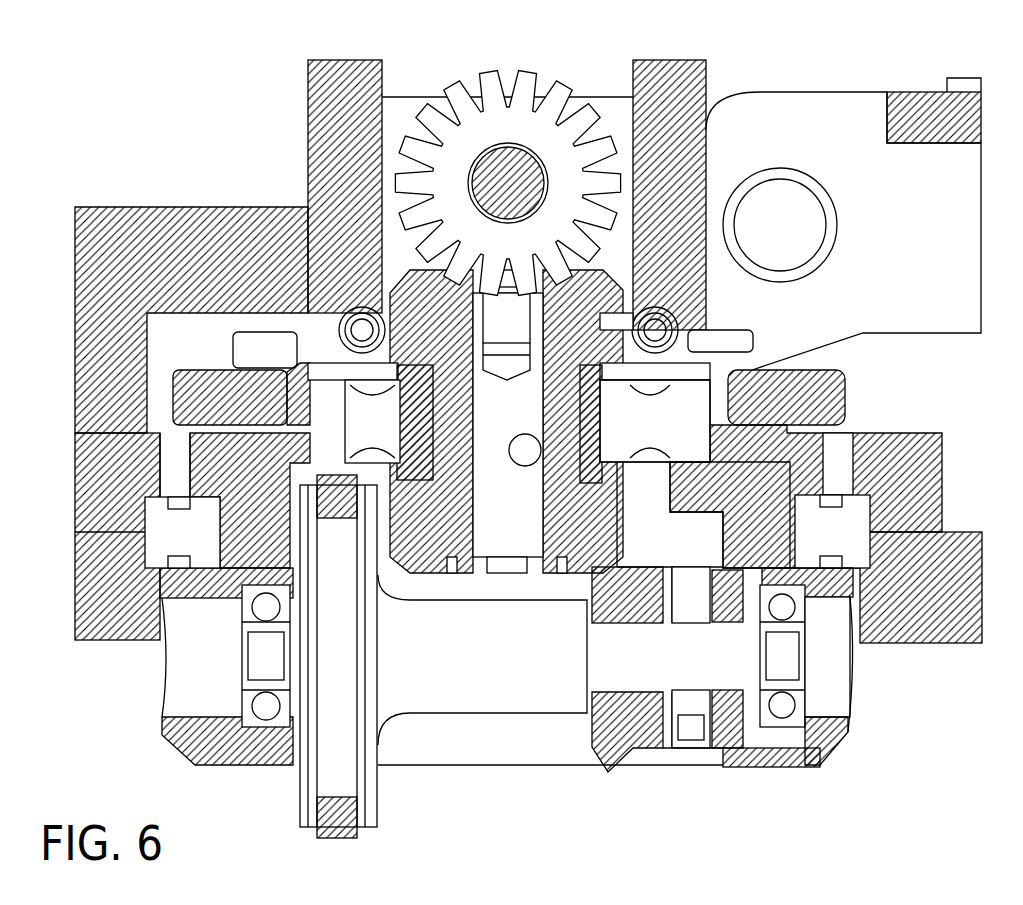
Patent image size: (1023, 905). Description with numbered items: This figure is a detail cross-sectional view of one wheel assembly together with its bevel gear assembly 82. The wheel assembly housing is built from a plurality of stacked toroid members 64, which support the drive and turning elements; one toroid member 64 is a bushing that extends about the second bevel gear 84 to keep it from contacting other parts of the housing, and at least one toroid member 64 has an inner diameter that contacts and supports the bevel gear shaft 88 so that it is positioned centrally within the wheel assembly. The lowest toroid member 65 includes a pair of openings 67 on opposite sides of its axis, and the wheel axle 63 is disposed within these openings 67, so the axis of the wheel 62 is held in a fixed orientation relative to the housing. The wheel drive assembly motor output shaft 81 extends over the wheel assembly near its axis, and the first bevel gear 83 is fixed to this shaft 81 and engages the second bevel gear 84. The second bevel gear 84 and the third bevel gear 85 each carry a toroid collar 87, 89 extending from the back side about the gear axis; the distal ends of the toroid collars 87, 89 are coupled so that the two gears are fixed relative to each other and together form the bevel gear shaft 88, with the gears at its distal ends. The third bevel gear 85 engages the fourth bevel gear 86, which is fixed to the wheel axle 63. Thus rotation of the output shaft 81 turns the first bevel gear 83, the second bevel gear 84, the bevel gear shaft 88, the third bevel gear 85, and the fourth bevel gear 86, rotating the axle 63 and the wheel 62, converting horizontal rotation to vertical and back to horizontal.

The wheel 62 is at (337, 758).
The wheel axle 63 is at (498, 698).
The toroid member 64 is at (287, 185).
The lowest toroid member 65 is at (182, 752).
The openings 67 is at (243, 705).
The wheel drive assembly motor output shaft 81 is at (522, 167).
The bevel gear assembly 82 is at (507, 160).
The first bevel gear 83 is at (440, 100).
The second bevel gear 84 is at (600, 281).
The third bevel gear 85 is at (615, 547).
The fourth bevel gear 86 is at (618, 760).
The toroid collar 87 is at (627, 317).
The bevel gear shaft 88 is at (583, 423).
The toroid collar 89 is at (580, 457).